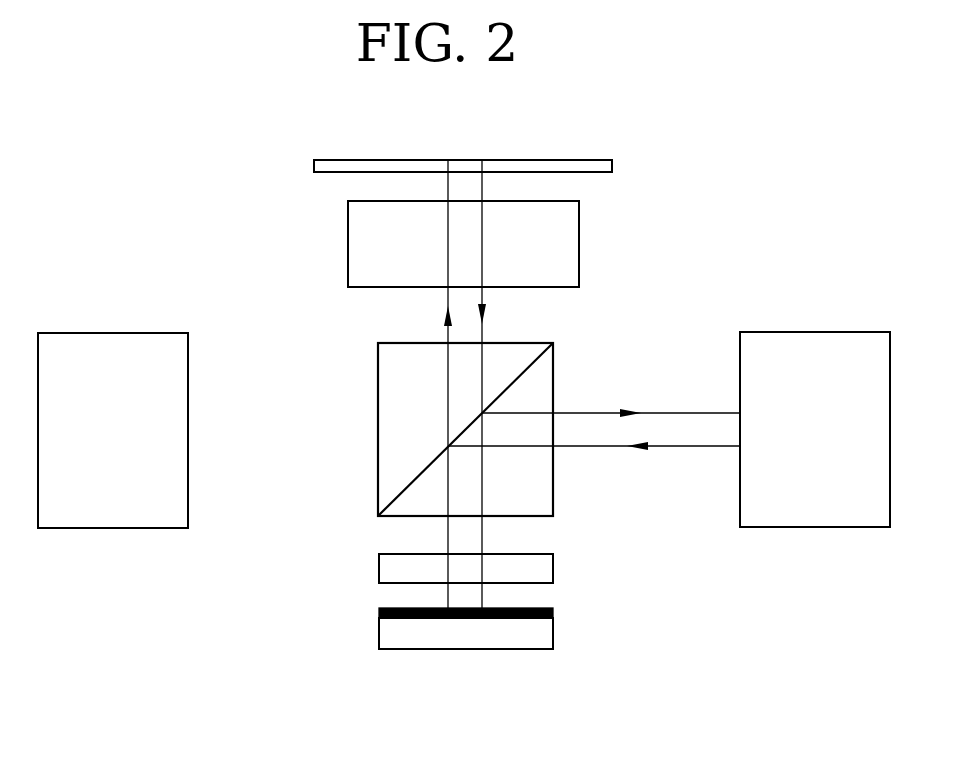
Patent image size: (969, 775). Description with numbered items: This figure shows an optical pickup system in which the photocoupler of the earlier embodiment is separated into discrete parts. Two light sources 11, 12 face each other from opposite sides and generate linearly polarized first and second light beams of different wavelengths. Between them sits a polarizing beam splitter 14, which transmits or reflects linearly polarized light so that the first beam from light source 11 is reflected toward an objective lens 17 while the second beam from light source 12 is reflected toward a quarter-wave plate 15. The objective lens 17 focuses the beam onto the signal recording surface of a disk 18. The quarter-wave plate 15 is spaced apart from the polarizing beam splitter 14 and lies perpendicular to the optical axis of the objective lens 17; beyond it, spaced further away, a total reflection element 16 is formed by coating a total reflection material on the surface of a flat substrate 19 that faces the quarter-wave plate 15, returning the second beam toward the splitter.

The light source 11 is at (114, 333).
The light source 12 is at (818, 332).
The polarizing beam splitter 14 is at (553, 396).
The quarter-wave plate 15 is at (553, 566).
The total reflection element 16 is at (378, 612).
The objective lens 17 is at (579, 243).
The disk 18 is at (558, 160).
The flat substrate 19 is at (464, 650).